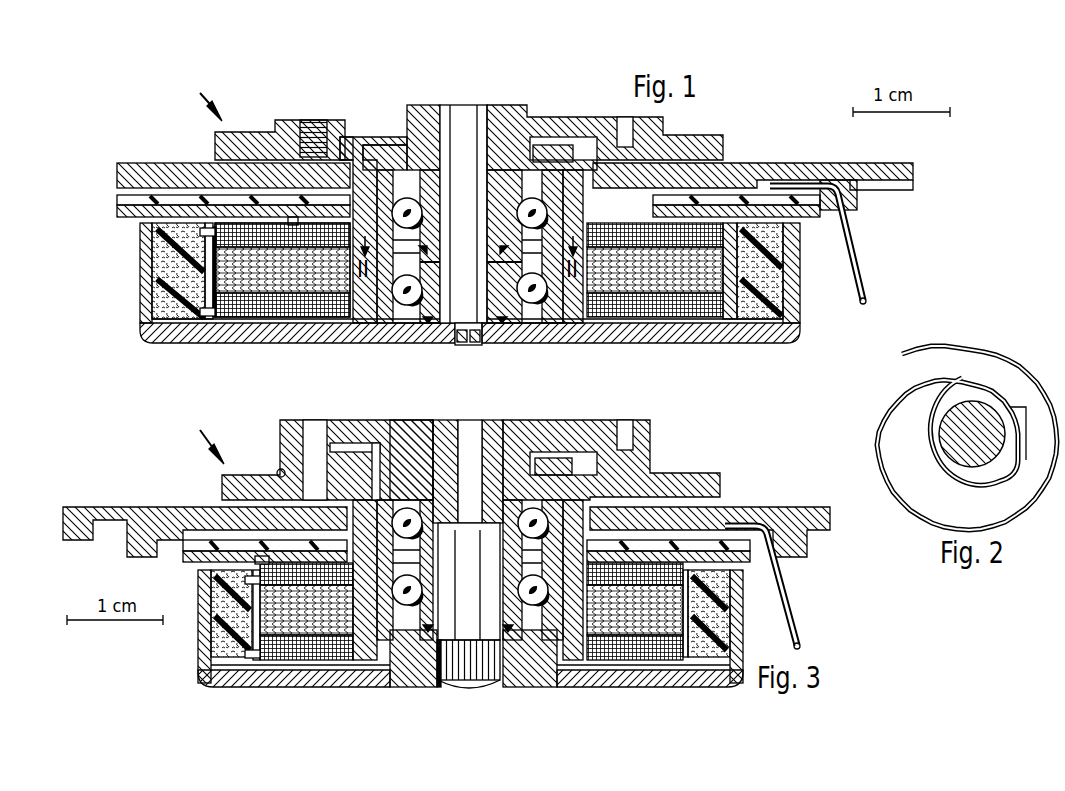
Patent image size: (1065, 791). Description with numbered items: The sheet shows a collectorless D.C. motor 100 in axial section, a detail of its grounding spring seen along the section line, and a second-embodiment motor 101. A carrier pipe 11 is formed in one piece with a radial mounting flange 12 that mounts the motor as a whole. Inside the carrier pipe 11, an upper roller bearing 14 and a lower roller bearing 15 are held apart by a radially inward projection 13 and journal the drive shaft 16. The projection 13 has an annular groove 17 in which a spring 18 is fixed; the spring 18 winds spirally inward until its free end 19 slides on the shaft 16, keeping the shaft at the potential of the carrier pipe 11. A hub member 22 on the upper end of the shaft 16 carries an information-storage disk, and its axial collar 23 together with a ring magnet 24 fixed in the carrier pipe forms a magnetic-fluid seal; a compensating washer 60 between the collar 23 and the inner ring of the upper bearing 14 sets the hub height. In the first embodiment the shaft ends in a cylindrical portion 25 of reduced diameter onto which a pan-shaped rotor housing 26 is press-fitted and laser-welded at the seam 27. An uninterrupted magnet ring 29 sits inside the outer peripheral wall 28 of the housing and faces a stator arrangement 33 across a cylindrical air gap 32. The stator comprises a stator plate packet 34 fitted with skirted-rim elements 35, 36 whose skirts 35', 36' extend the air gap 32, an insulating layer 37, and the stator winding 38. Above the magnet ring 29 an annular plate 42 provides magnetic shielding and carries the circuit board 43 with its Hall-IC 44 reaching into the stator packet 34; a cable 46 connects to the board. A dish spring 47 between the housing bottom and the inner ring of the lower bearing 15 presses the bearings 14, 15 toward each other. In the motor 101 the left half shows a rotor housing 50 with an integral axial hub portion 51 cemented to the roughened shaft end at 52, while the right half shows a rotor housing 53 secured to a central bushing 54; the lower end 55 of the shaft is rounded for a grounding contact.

In FIG. 1, the collectorless D.C. motor 100 is at (195, 95).
In FIG. 3, the motor 101 is at (196, 434).
In FIG. 1, the carrier pipe 11 is at (366, 300).
In FIG. 3, the carrier pipe 11 is at (575, 647).
In FIG. 1, the radial mounting flange 12 is at (797, 170).
In FIG. 3, the radial mounting flange 12 is at (775, 520).
In FIG. 1, the radially inward projection 13 is at (553, 220).
In FIG. 1, the upper roller bearing 14 is at (443, 196).
In FIG. 3, the upper roller bearing 14 is at (565, 500).
In FIG. 1, the lower roller bearing 15 is at (441, 297).
In FIG. 3, the lower roller bearing 15 is at (541, 625).
In FIG. 1, the drive shaft 16 is at (465, 112).
In FIG. 2, the drive shaft 16 is at (990, 410).
In FIG. 3, the drive shaft 16 is at (446, 425).
In FIG. 1, the annular groove 17 is at (552, 307).
In FIG. 1, the spring 18 is at (503, 267).
In FIG. 2, the spring 18 is at (966, 358).
In FIG. 1, the free end 19 is at (499, 249).
In FIG. 2, the free end 19 is at (1024, 412).
In FIG. 1, the hub member 22 is at (553, 125).
In FIG. 3, the hub member 22 is at (561, 425).
In FIG. 1, the axial collar 23 is at (418, 140).
In FIG. 3, the axial collar 23 is at (416, 432).
In FIG. 1, the ring magnet 24 is at (385, 150).
In FIG. 3, the ring magnet 24 is at (377, 430).
In FIG. 1, the cylindrical portion of reduced diameter 25 is at (474, 345).
In FIG. 1, the rotor housing 26 is at (593, 338).
In FIG. 1, the seam 27 is at (460, 345).
In FIG. 1, the outer peripheral wall 28 is at (795, 292).
In FIG. 1, the magnet ring 29 is at (777, 262).
In FIG. 3, the magnet ring 29 is at (735, 632).
In FIG. 1, the air gap 32 is at (213, 318).
In FIG. 1, the stator arrangement 33 is at (287, 324).
In FIG. 3, the stator arrangement 33 is at (310, 662).
In FIG. 1, the stator plate packet 34 is at (263, 272).
In FIG. 3, the stator plate packet 34 is at (322, 625).
In FIG. 1, the skirted-rim element 35 is at (286, 152).
In FIG. 1, the skirt 35' is at (157, 240).
In FIG. 3, the skirt 35' is at (206, 579).
In FIG. 1, the skirted-rim element 36 is at (282, 305).
In FIG. 1, the skirt 36' is at (157, 306).
In FIG. 3, the skirt 36' is at (204, 651).
In FIG. 1, the layer of insulating material 37 is at (237, 320).
In FIG. 1, the stator winding 38 is at (328, 222).
In FIG. 3, the stator winding 38 is at (281, 469).
In FIG. 1, the annular plate 42 is at (135, 210).
In FIG. 3, the annular plate 42 is at (186, 556).
In FIG. 1, the circuit board 43 is at (183, 200).
In FIG. 3, the circuit board 43 is at (205, 545).
In FIG. 1, the Hall-IC 44 is at (230, 215).
In FIG. 3, the Hall-IC 44 is at (262, 556).
In FIG. 1, the cable 46 is at (860, 278).
In FIG. 3, the cable 46 is at (800, 616).
In FIG. 1, the dish spring 47 is at (502, 326).
In FIG. 3, the dish spring 47 is at (395, 662).
In FIG. 3, the rotor housing 50 is at (268, 676).
In FIG. 3, the axial hub portion 51 is at (418, 652).
In FIG. 3, the cemented joint at roughened shaft end 52 is at (442, 668).
In FIG. 3, the rotor housing 53 is at (665, 676).
In FIG. 3, the central bushing 54 is at (518, 652).
In FIG. 3, the lower end 55 is at (470, 688).
In FIG. 1, the compensating washer 60 is at (512, 178).
In FIG. 3, the compensating washer 60 is at (513, 480).